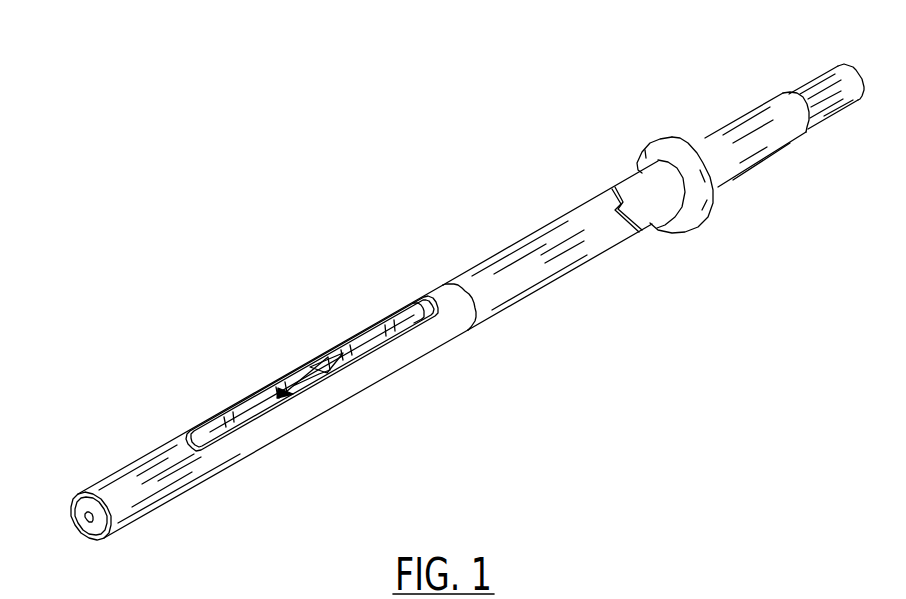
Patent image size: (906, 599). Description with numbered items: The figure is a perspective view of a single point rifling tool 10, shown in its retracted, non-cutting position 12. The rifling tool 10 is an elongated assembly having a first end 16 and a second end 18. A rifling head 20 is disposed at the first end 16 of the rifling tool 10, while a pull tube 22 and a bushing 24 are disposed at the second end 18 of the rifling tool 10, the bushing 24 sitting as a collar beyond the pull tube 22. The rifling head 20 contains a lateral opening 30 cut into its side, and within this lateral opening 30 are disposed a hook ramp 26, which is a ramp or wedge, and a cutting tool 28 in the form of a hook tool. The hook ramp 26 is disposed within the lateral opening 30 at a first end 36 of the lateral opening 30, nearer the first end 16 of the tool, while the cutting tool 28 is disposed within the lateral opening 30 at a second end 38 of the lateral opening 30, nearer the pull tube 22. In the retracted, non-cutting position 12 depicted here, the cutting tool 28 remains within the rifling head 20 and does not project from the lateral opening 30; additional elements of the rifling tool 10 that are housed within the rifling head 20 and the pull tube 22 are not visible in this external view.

The single point rifling tool 10 is at (282, 211).
The retracted, non-cutting position 12 is at (372, 248).
The first end 16 is at (88, 522).
The second end 18 is at (850, 66).
The rifling head 20 is at (137, 514).
The pull tube 22 is at (542, 263).
The bushing 24 is at (733, 164).
The hook ramp 26 is at (223, 410).
The cutting tool 28 is at (313, 366).
The lateral opening 30 is at (287, 398).
The first end of the lateral opening 36 is at (205, 428).
The second end of the lateral opening 38 is at (415, 307).